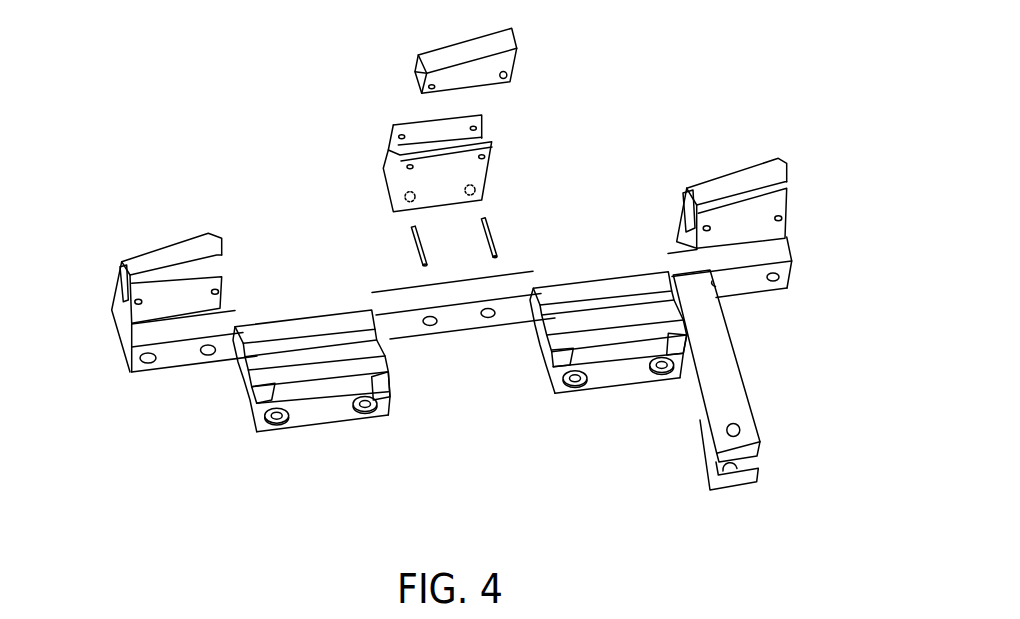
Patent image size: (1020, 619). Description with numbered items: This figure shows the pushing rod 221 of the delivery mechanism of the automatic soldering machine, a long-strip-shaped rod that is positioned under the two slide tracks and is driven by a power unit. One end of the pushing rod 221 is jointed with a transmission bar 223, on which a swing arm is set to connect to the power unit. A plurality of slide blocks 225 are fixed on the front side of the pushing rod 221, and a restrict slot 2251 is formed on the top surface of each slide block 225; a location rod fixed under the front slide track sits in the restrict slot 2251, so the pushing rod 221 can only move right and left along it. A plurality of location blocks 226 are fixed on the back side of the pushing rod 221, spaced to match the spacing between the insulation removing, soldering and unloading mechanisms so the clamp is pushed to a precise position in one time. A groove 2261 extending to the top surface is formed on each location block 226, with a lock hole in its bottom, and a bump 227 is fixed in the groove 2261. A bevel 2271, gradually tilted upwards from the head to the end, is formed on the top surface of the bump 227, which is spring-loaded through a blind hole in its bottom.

The pushing rod 221 is at (145, 337).
The transmission bar 223 is at (732, 410).
The slide block 225 is at (333, 415).
The restrict slot 2251 is at (325, 353).
The location block 226 is at (456, 181).
The groove 2261 is at (457, 140).
The bump 227 is at (468, 62).
The bevel 2271 is at (490, 47).